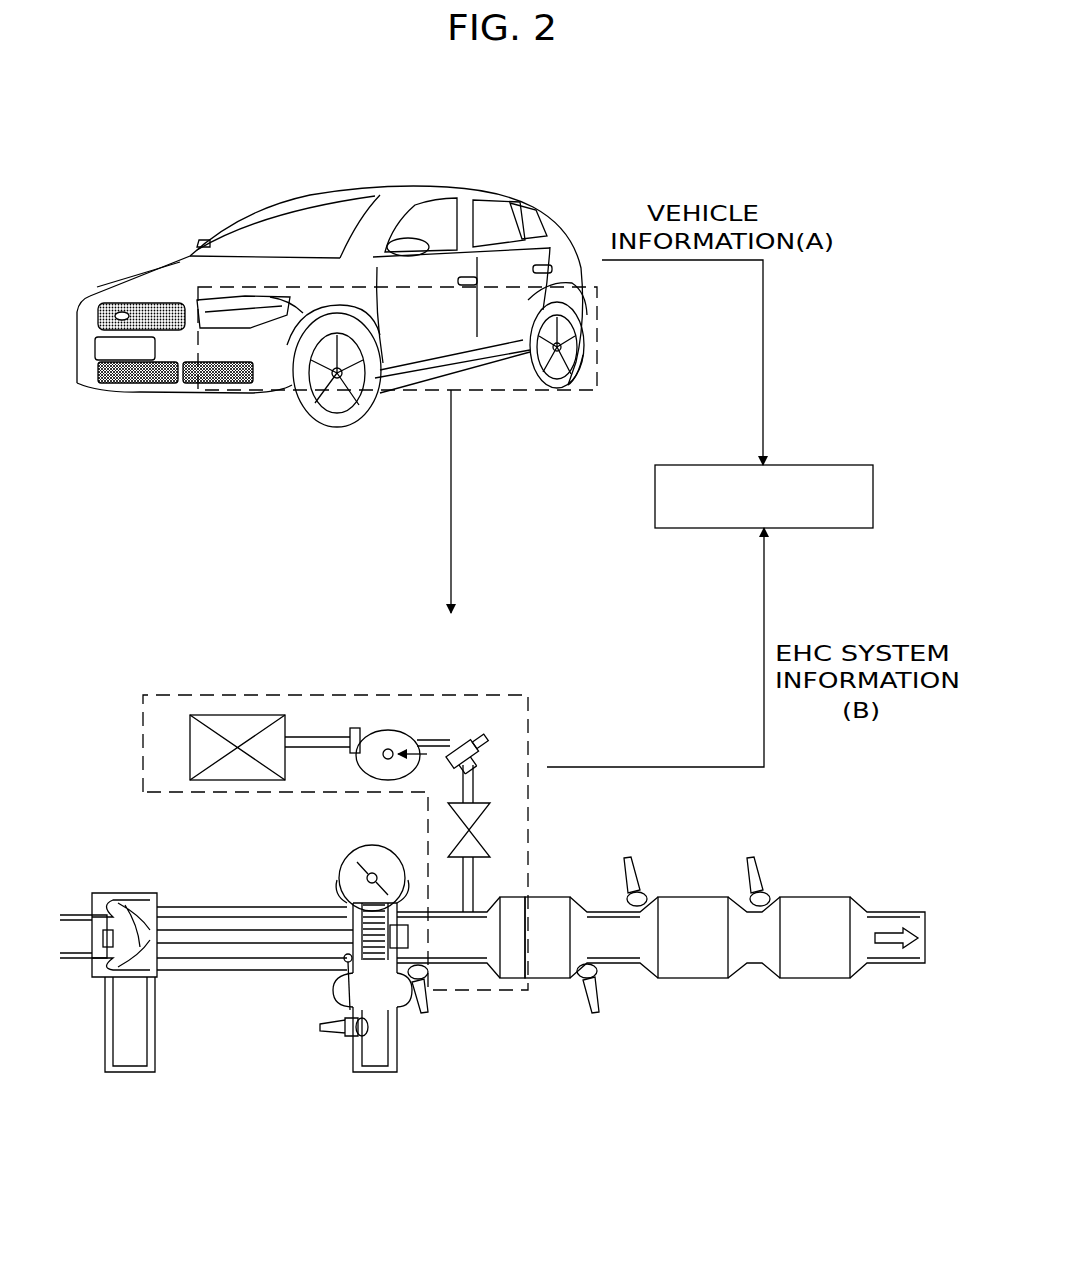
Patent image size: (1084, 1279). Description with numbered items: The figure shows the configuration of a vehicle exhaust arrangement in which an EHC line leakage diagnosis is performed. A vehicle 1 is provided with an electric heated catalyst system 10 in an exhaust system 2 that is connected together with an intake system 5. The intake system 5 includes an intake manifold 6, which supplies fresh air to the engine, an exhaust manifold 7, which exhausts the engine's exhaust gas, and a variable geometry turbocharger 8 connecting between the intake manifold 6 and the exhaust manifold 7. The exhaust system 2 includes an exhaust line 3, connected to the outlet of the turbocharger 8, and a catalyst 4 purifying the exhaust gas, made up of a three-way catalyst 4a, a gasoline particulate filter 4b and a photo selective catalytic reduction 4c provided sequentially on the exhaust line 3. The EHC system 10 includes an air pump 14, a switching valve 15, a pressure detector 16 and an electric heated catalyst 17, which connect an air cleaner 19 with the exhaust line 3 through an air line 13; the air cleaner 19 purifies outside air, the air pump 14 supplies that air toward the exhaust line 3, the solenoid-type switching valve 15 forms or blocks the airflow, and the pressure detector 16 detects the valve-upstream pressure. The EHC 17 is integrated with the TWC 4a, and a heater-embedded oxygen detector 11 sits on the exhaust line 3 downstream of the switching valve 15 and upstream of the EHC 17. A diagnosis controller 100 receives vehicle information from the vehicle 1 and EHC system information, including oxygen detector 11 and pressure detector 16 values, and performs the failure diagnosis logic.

The vehicle 1 is at (375, 190).
The exhaust system 2 is at (661, 1029).
The exhaust line 3 is at (455, 948).
The catalyst 4 is at (687, 1017).
The three-way catalyst (TWC) 4a is at (548, 978).
The gasoline particulate filter (GPF) 4b is at (690, 978).
The photo selective catalytic reduction (PSCR) 4c is at (795, 984).
The intake system 5 is at (236, 1030).
The intake manifold 6 is at (140, 1015).
The exhaust manifold 7 is at (353, 1003).
The variable geometry turbocharger (VGT) 8 is at (260, 950).
The electric heated catalyst (EHC) system 10 is at (143, 745).
The oxygen detector 11 is at (428, 1015).
The air line 13 is at (320, 740).
The air pump 14 is at (386, 735).
The switching valve 15 is at (460, 820).
The pressure detector 16 is at (478, 740).
The electric heated catalyst (EHC) 17 is at (510, 902).
The air cleaner 19 is at (225, 725).
The diagnosis controller 100 is at (832, 465).